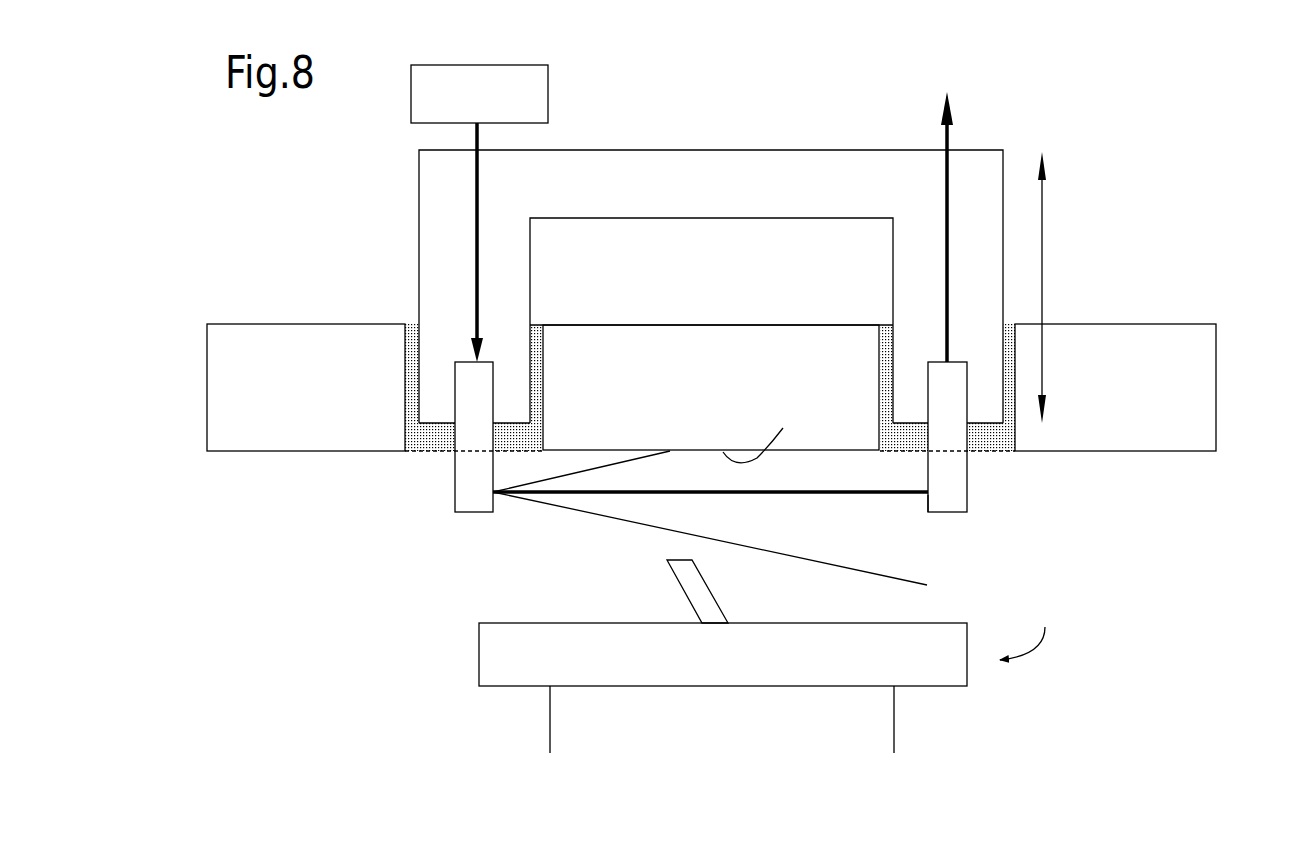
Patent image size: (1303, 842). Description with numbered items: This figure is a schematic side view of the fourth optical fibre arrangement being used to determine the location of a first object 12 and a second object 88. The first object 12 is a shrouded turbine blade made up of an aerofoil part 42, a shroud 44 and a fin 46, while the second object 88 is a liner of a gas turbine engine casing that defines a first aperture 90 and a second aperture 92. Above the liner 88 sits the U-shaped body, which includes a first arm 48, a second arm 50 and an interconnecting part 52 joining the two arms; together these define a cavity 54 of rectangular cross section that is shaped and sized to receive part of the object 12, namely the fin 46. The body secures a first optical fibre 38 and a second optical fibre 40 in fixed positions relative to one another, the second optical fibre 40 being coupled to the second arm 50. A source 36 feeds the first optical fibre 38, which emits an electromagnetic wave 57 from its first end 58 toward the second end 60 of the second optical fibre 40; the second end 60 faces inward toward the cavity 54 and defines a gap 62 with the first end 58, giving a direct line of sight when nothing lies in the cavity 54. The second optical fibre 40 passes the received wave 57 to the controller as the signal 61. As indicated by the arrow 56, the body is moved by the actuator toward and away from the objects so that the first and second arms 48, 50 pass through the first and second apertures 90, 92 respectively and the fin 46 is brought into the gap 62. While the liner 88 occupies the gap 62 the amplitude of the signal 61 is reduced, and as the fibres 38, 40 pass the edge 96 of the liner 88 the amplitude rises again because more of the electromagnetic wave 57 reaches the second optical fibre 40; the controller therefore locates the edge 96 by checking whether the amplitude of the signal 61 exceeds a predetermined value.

The first object 12 is at (1032, 629).
The laser source 36 is at (548, 112).
The first optical fibre 38 is at (466, 495).
The second optical fibre 40 is at (950, 497).
The aerofoil part 42 is at (882, 720).
The shroud 44 is at (500, 660).
The fin 46 is at (693, 585).
The first arm 48 is at (520, 292).
The second arm 50 is at (933, 292).
The interconnecting part 52 is at (728, 200).
The cavity 54 is at (715, 284).
The arrow 56 is at (1044, 218).
The electromagnetic wave 57 is at (474, 232).
The first end 58 is at (500, 500).
The second end 60 is at (928, 500).
The signal 61 is at (945, 140).
The gap 62 is at (749, 526).
The second object 88 is at (1225, 386).
The first aperture 90 is at (420, 442).
The second aperture 92 is at (993, 438).
The edge 96 is at (770, 435).